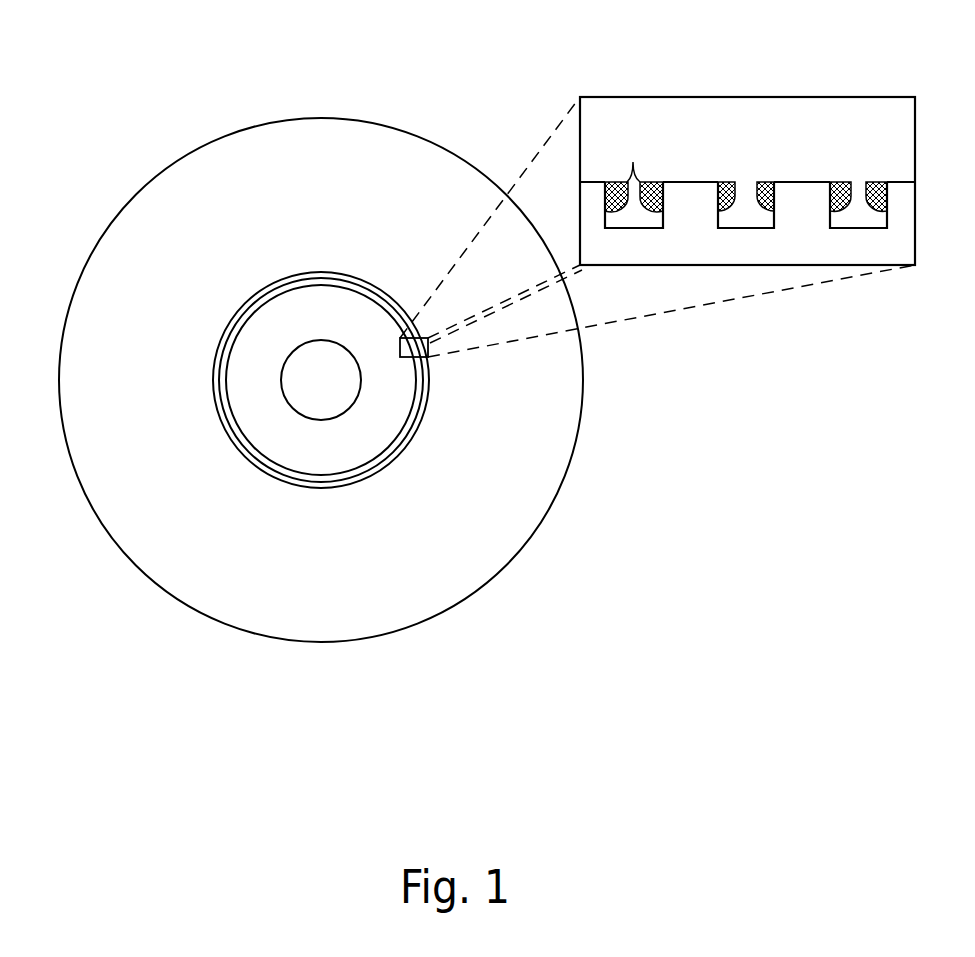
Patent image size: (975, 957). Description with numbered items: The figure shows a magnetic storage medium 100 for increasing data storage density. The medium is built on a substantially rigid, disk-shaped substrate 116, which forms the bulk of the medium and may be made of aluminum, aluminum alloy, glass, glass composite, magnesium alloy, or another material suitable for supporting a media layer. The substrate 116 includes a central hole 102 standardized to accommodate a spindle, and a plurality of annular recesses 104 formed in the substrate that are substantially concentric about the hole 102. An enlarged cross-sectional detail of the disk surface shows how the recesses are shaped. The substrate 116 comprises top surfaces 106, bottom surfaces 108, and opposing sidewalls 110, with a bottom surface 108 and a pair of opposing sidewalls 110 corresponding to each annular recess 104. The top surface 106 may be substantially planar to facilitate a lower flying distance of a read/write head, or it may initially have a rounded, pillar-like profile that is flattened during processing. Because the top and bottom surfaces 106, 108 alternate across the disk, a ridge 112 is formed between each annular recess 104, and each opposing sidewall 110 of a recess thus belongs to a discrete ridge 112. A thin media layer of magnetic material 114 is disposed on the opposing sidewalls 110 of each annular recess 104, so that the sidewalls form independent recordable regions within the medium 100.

The magnetic storage medium 100 is at (110, 70).
The central hole 102 is at (329, 401).
The annular recesses 104 is at (329, 276).
The top surfaces 106 is at (685, 180).
The bottom surfaces 108 is at (748, 227).
The opposing sidewalls 110 is at (633, 162).
The ridge 112 is at (800, 192).
The magnetic material 114 is at (843, 192).
The substrate 116 is at (729, 259).